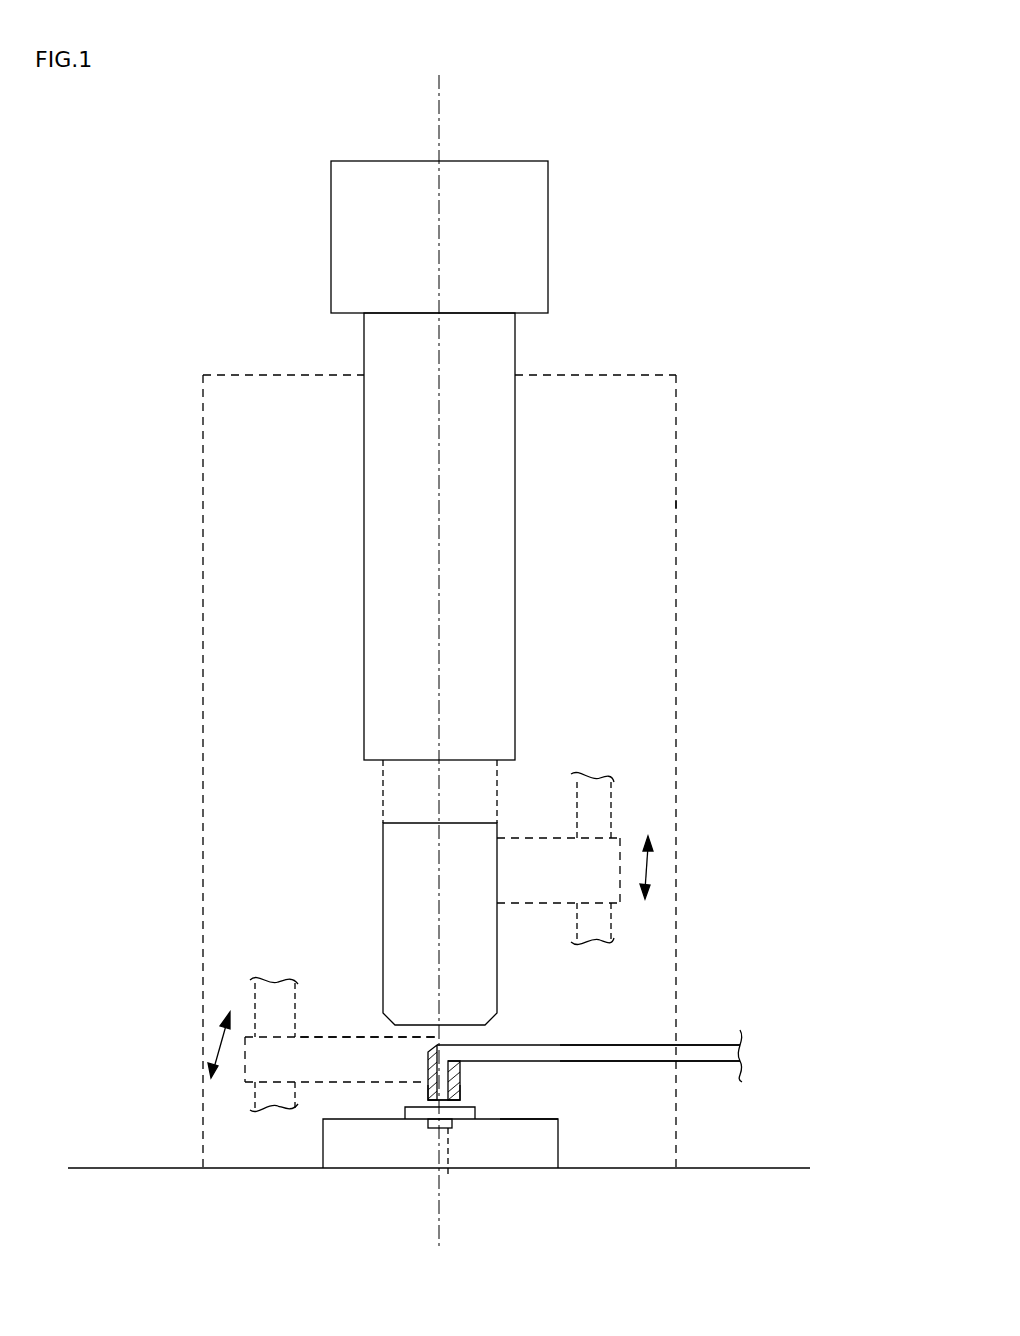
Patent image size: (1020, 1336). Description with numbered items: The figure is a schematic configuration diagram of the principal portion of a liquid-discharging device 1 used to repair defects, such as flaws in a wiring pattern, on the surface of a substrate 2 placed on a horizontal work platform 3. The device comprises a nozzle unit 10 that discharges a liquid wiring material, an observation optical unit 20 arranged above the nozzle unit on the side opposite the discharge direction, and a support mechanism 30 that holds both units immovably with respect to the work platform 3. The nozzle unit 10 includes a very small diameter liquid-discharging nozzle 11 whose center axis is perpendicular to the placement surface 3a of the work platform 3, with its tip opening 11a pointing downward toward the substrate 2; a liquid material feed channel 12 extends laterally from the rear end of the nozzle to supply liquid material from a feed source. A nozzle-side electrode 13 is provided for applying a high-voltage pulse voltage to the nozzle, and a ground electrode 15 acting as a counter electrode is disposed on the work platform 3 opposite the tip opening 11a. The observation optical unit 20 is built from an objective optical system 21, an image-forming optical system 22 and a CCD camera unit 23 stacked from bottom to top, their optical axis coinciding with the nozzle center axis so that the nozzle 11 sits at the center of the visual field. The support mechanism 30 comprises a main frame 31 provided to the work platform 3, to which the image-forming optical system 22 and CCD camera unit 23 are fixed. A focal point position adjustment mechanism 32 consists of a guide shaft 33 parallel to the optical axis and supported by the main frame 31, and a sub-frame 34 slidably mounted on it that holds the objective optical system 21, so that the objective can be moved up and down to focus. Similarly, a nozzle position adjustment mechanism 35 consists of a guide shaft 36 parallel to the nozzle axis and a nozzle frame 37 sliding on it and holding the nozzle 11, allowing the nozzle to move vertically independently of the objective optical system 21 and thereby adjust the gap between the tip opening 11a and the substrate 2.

The liquid-discharging device 1 is at (640, 290).
The substrate 2 is at (406, 1108).
The work platform 3 is at (558, 1143).
The placement surface 3a is at (540, 1118).
The nozzle unit 10 is at (595, 1038).
The liquid-discharging nozzle 11 is at (427, 1050).
The tip opening 11a is at (425, 1099).
The liquid material feed channel 12 is at (712, 1046).
The nozzle-side electrode 13 is at (456, 1096).
The ground electrode 15 is at (440, 1128).
The observation optical unit 20 is at (112, 382).
The objective optical system 21 is at (383, 855).
The image-forming optical system 22 is at (364, 477).
The CCD camera unit 23 is at (331, 240).
The support mechanism 30 is at (680, 429).
The main frame 31 is at (678, 505).
The focal point position adjustment mechanism 32 is at (630, 818).
The guide shaft 33 is at (612, 925).
The sub-frame 34 is at (540, 838).
The nozzle position adjustment mechanism 35 is at (240, 1088).
The guide shaft 36 is at (255, 1005).
The nozzle frame 37 is at (350, 1035).